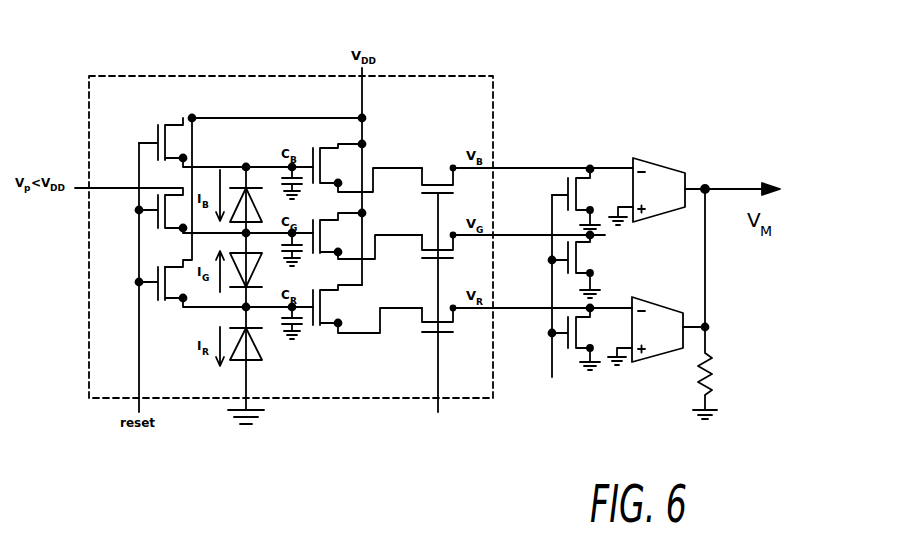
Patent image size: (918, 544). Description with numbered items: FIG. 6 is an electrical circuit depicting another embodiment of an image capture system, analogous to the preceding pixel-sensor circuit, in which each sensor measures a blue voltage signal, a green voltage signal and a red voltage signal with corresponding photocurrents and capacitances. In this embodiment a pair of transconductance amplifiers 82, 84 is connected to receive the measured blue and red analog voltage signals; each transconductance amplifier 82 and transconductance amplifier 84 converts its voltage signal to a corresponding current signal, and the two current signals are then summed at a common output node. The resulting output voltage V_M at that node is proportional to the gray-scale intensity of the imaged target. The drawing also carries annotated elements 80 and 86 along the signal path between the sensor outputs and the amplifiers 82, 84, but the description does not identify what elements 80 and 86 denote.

The select gate transistors 80 is at (442, 133).
The transconductance amplifier 82 is at (667, 172).
The transconductance amplifier 84 is at (658, 310).
The current source transistors 86 is at (583, 144).